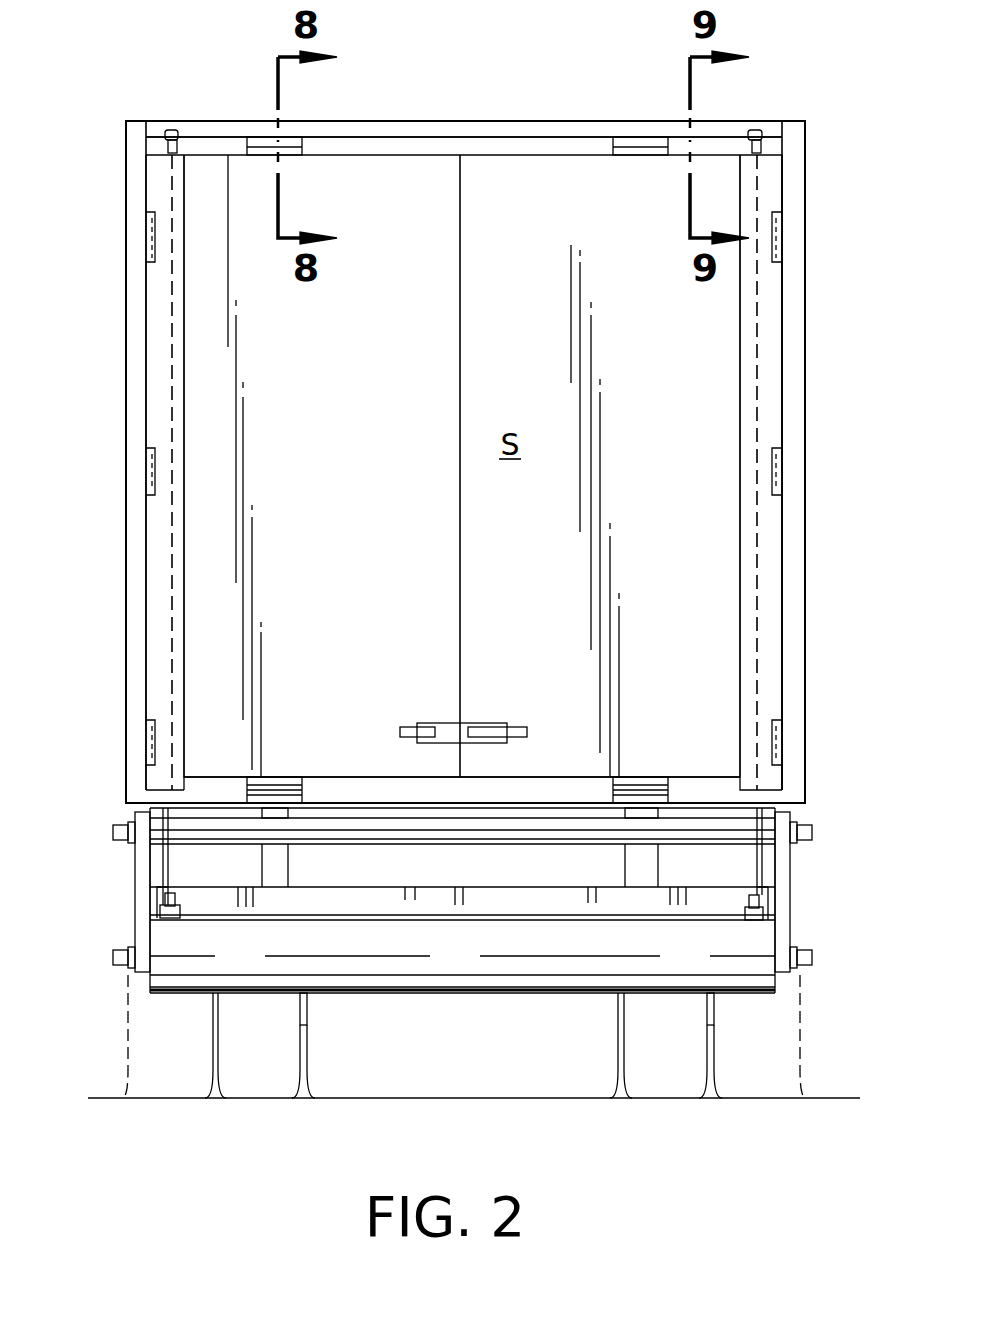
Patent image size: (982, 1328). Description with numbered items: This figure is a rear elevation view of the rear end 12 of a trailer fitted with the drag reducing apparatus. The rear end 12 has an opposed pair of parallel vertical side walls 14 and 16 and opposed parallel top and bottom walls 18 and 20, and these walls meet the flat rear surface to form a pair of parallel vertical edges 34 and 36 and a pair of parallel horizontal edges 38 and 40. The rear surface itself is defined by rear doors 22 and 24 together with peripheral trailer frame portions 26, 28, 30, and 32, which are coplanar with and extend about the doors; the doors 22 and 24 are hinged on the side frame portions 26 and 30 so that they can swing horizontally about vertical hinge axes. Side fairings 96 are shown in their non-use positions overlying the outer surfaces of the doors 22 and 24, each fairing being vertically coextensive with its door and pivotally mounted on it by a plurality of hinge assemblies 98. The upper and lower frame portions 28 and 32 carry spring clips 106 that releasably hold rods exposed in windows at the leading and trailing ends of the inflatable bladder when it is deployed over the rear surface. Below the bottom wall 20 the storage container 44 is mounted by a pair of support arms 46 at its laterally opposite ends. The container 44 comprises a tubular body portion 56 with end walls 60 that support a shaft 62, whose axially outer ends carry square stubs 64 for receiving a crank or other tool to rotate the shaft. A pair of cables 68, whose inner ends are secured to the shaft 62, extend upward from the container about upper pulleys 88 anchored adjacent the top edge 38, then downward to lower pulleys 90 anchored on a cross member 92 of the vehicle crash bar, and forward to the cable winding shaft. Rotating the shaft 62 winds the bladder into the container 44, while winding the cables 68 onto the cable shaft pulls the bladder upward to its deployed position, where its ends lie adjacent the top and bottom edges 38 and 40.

The rear end 12 is at (820, 113).
The side wall 14 is at (130, 121).
The side wall 16 is at (806, 190).
The top wall 18 is at (368, 121).
The bottom wall 20 is at (525, 808).
The rear door 22 is at (200, 280).
The rear door 24 is at (715, 322).
The trailer frame portion 26 is at (140, 522).
The upper peripheral frame portion 28 is at (480, 150).
The trailer frame portion 30 is at (790, 528).
The lower peripheral frame portion 32 is at (703, 800).
The vertical edge 34 is at (125, 572).
The vertical edge 36 is at (808, 578).
The top edge 38 is at (712, 121).
The bottom edge 40 is at (200, 803).
The container 44 is at (152, 1007).
The support arm 46 is at (135, 860).
The tubular body portion 56 is at (750, 997).
The end wall 60 is at (150, 985).
The shaft 62 is at (118, 932).
The square stub 64 is at (113, 955).
The cable 68 is at (172, 638).
The pulley 88 is at (142, 147).
The pulley 90 is at (200, 935).
The cross member 92 is at (470, 900).
The side fairing 96 is at (160, 325).
The hinge assembly 98 is at (150, 238).
The spring clip 106 is at (265, 147).